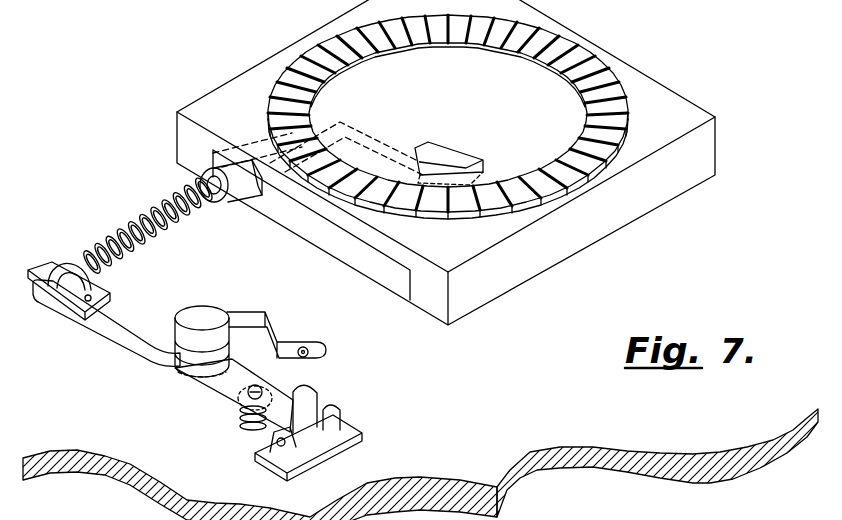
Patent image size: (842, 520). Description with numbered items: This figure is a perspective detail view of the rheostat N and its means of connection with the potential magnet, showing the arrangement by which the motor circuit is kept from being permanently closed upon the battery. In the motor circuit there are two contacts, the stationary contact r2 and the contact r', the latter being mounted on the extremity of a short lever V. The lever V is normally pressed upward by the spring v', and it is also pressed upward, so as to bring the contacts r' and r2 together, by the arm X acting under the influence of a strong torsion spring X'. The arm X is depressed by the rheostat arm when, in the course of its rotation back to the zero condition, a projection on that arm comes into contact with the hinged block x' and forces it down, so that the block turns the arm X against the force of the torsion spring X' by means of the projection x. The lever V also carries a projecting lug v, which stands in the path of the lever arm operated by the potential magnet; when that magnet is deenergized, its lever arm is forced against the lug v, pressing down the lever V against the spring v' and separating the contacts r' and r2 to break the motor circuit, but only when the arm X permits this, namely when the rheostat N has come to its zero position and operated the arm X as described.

The rheostat N is at (446, 162).
The projection x is at (347, 145).
The hinged block x' is at (449, 156).
The torsion spring X' is at (145, 240).
The arm X is at (106, 326).
The stationary contact r2 is at (185, 308).
The contact r' is at (182, 347).
The short lever V is at (222, 378).
The spring v' is at (238, 418).
The lug v is at (308, 422).